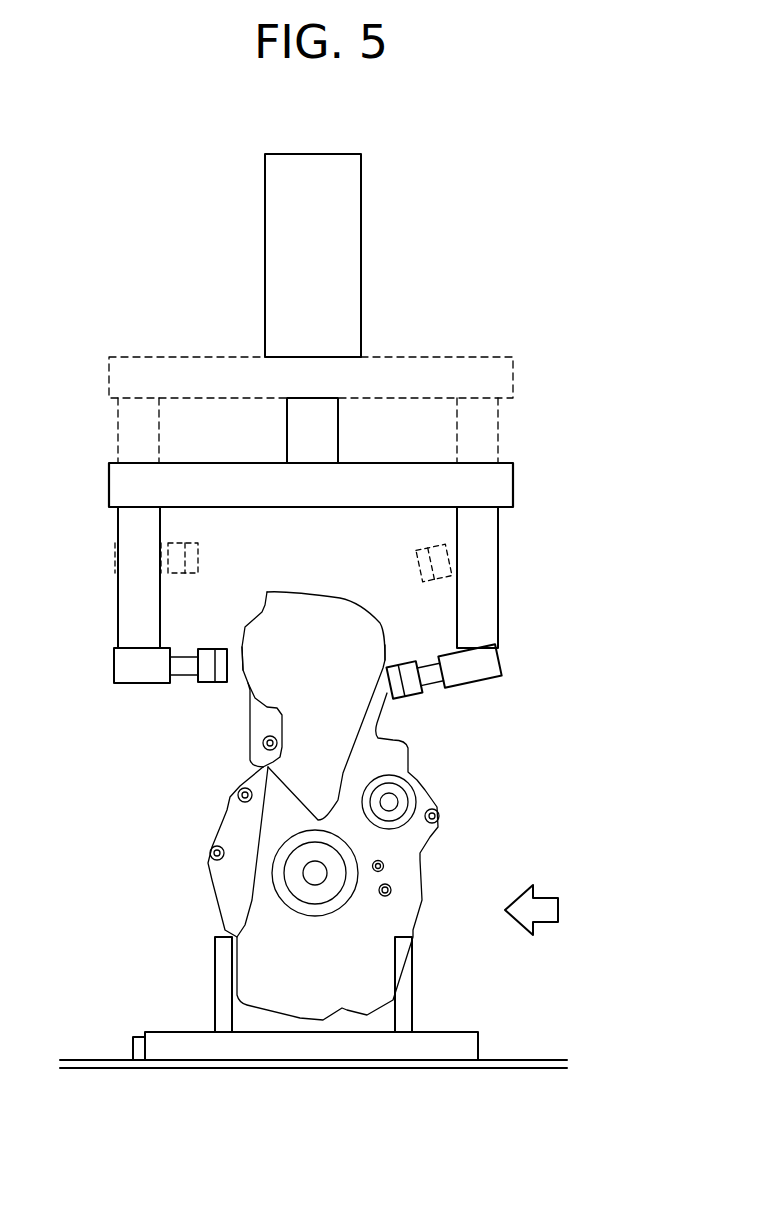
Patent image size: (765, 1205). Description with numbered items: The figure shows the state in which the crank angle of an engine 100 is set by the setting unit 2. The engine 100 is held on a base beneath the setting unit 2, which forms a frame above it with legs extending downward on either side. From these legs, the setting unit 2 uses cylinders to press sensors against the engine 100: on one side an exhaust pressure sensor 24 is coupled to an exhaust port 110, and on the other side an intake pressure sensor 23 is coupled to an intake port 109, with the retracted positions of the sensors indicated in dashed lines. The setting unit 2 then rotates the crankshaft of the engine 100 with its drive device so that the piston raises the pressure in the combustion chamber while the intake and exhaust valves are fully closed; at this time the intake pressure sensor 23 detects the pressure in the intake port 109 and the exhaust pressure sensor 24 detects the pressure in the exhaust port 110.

The setting unit 2 is at (502, 487).
The intake pressure sensor 23 is at (452, 543).
The exhaust pressure sensor 24 is at (200, 549).
The engine 100 is at (413, 837).
The intake port 109 is at (384, 665).
The exhaust port 110 is at (228, 657).